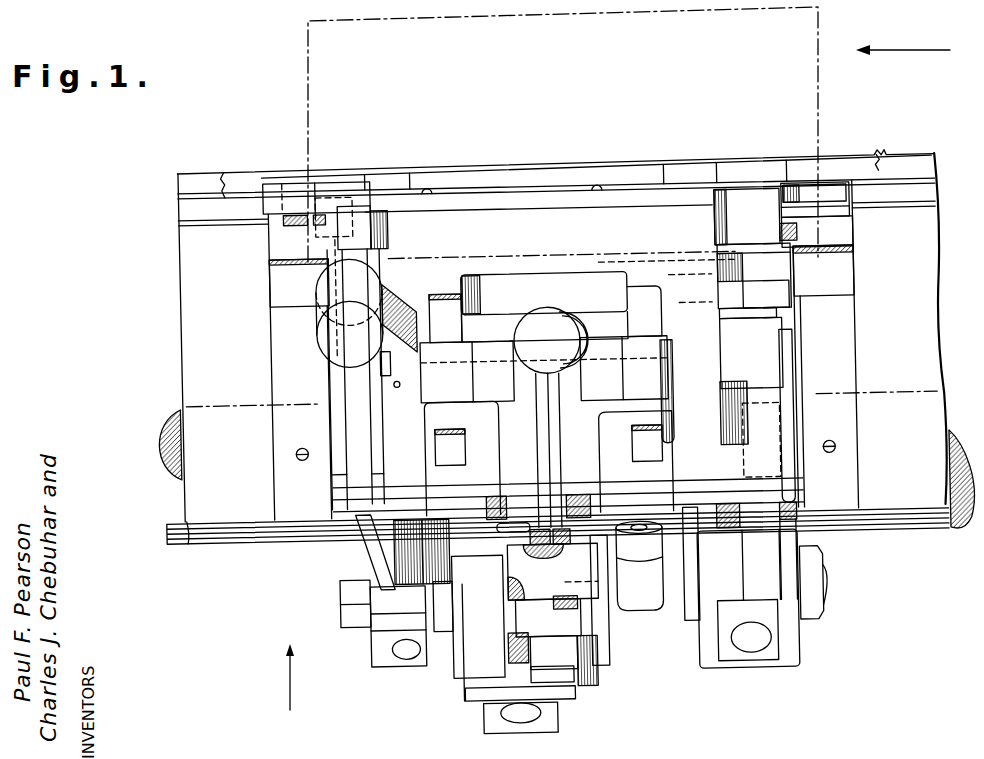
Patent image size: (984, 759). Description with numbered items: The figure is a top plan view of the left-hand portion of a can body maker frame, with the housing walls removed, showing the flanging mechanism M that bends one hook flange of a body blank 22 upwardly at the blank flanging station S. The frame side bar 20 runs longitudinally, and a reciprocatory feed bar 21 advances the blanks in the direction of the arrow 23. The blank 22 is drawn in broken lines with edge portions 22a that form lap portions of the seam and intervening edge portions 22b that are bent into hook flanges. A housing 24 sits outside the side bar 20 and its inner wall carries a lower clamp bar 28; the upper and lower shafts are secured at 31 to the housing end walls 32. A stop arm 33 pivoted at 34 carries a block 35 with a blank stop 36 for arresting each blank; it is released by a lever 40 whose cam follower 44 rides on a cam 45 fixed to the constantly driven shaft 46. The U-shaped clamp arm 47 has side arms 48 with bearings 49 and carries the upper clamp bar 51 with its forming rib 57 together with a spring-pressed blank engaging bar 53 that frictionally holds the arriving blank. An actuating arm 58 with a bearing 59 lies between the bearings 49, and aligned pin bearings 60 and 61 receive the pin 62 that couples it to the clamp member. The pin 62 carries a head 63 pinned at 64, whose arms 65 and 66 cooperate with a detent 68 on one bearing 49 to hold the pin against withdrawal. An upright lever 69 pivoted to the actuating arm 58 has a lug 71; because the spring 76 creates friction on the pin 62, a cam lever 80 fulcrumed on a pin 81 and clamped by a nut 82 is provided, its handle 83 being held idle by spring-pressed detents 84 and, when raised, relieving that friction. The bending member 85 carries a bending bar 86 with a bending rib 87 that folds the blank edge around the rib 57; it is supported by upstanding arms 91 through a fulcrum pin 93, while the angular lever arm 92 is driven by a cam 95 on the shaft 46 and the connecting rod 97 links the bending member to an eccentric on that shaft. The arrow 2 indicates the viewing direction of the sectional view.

The view direction arrow 2 is at (290, 690).
The frame side bar 20 is at (942, 199).
The feed bar 21 is at (888, 166).
The body blank 22 is at (311, 59).
The edge portion 22a is at (318, 266).
The intervening edge portion 22b is at (563, 271).
The feed direction arrow 23 is at (906, 49).
The housing 24 is at (263, 353).
The lower clamp bar 28 is at (845, 231).
The shaft securing means 31 is at (293, 452).
The housing end wall 32 is at (270, 391).
The stop arm 33 is at (372, 240).
The stop arm pivot 34 is at (348, 468).
The block 35 is at (272, 192).
The blank stop 36 is at (292, 226).
The lever 40 is at (365, 648).
The cam follower 44 is at (352, 600).
The cam 45 is at (398, 540).
The driven shaft 46 is at (213, 540).
The clamp arm 47 is at (621, 207).
The side arm 48 is at (426, 302).
The bearing 49 is at (456, 222).
The upper clamp bar 51 is at (783, 232).
The blank engaging bar 53 is at (324, 226).
The forming rib 57 is at (782, 241).
The actuating arm 58 is at (580, 437).
The bearing 59 is at (473, 452).
The pin bearing 60 is at (467, 350).
The pin bearing 61 is at (591, 343).
The pin 62 is at (673, 382).
The head 63 is at (410, 380).
The head pin 64 is at (400, 384).
The arm 65 is at (414, 426).
The arm 66 is at (392, 294).
The detent 68 is at (402, 470).
The lever 69 is at (457, 683).
The lug 71 is at (495, 560).
The spring 76 is at (510, 521).
The cam lever 80 is at (558, 597).
The pin 81 is at (544, 630).
The nut 82 is at (564, 660).
The handle 83 is at (556, 405).
The spring-pressed detent 84 is at (565, 498).
The bending member 85 is at (517, 291).
The bending bar 86 is at (767, 272).
The bending rib 87 is at (757, 255).
The upstanding arm 91 is at (778, 319).
The lever arm 92 is at (783, 667).
The fulcrum pin 93 is at (794, 382).
The cam 95 is at (726, 505).
The connecting rod 97 is at (649, 595).
The blank flanging station S is at (533, 160).
The flanging mechanism M is at (283, 583).